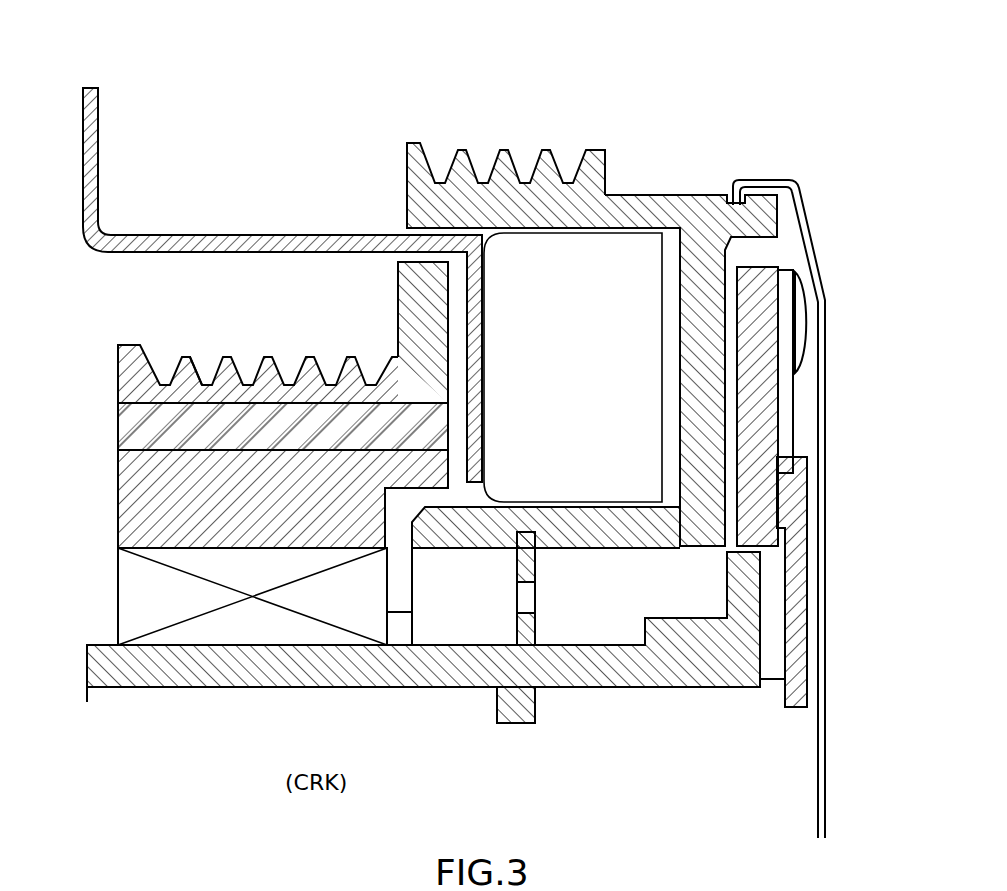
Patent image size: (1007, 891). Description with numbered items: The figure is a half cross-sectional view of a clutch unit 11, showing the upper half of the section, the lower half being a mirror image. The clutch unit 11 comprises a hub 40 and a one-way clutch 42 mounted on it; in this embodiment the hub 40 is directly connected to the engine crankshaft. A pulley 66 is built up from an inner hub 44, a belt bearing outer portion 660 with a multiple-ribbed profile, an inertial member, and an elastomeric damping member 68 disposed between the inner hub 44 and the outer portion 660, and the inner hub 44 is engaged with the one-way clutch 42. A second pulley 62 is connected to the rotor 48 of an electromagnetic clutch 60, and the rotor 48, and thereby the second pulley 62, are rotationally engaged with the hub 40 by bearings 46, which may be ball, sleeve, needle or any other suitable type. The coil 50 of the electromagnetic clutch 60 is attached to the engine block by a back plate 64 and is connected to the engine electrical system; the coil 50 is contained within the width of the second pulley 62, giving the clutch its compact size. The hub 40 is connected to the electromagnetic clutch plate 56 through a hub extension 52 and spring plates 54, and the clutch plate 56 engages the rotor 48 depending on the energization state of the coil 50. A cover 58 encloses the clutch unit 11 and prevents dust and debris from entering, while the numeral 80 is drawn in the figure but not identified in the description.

The clutch unit 11 is at (764, 116).
The hub 40 is at (102, 668).
The one-way clutch 42 is at (237, 623).
The inner hub 44 is at (298, 517).
The bearings 46 is at (563, 625).
The rotor 48 is at (600, 533).
The coil 50 is at (632, 473).
The hub extension 52 is at (805, 560).
The spring plates 54 is at (785, 403).
The electromagnetic clutch plate 56 is at (803, 320).
The cover 58 is at (805, 187).
The electromagnetic clutch 60 is at (660, 195).
The second pulley 62 is at (497, 182).
The back plate 64 is at (98, 132).
The pulley 66 is at (133, 382).
The damping member 68 is at (150, 432).
The flange 80 is at (417, 310).
The belt bearing outer portion 660 is at (197, 363).